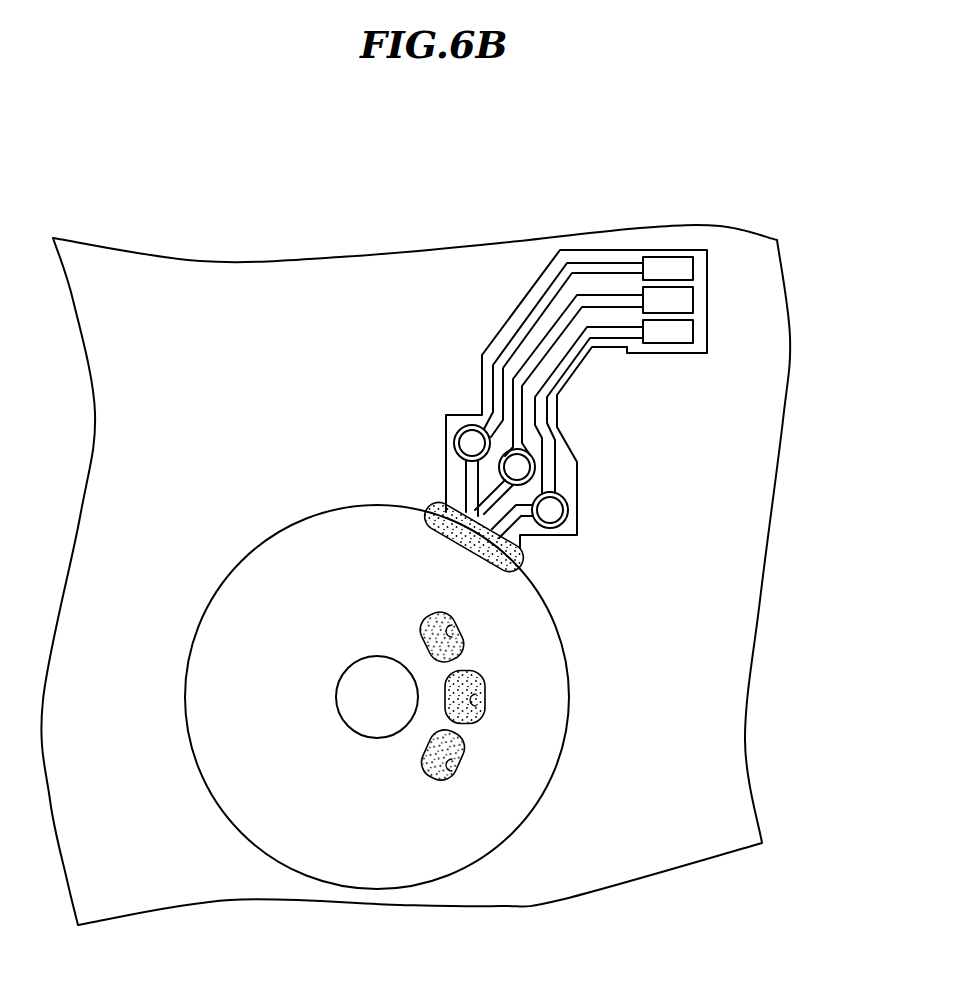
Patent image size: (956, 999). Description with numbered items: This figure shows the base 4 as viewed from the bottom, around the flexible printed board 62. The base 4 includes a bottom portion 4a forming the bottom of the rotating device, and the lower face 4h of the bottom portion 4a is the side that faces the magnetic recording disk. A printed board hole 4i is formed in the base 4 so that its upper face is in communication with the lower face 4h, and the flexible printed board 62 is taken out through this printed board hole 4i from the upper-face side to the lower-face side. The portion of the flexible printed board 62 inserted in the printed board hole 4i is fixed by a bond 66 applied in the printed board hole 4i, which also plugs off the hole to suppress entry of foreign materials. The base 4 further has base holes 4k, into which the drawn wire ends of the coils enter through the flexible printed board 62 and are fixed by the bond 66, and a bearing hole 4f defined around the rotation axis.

The base 4 is at (466, 264).
The bottom portion 4a is at (637, 822).
The bearing hole 4f is at (336, 697).
The lower face 4h is at (551, 882).
The printed board hole 4i is at (520, 543).
The base hole 4k is at (458, 633).
The flexible printed board 62 is at (595, 258).
The bond 66 is at (448, 508).